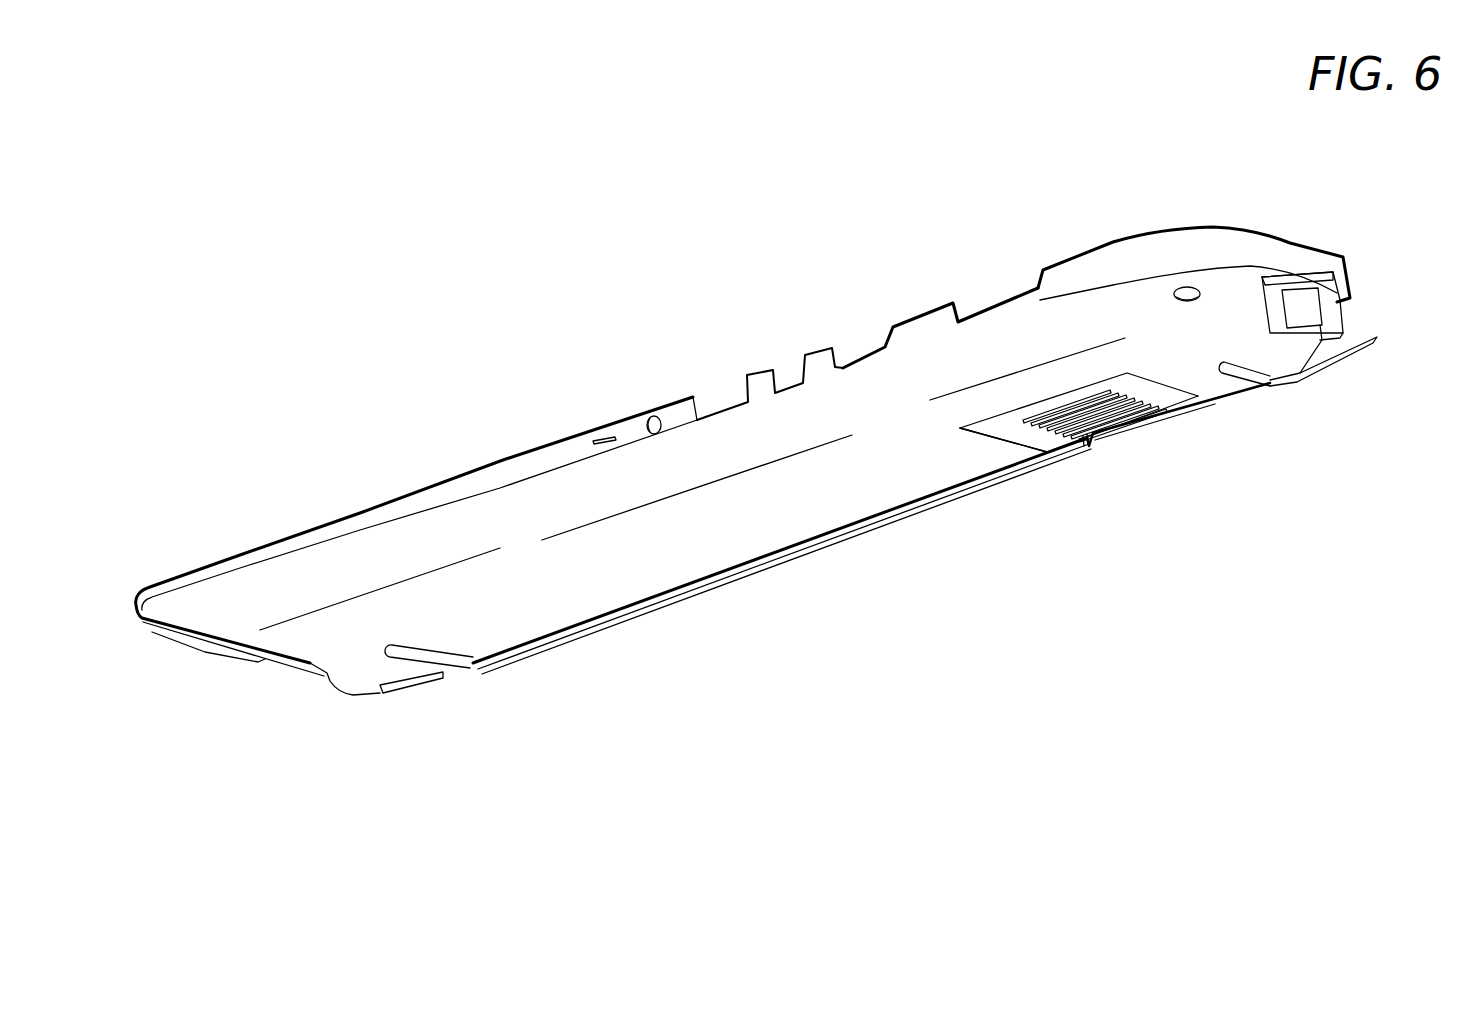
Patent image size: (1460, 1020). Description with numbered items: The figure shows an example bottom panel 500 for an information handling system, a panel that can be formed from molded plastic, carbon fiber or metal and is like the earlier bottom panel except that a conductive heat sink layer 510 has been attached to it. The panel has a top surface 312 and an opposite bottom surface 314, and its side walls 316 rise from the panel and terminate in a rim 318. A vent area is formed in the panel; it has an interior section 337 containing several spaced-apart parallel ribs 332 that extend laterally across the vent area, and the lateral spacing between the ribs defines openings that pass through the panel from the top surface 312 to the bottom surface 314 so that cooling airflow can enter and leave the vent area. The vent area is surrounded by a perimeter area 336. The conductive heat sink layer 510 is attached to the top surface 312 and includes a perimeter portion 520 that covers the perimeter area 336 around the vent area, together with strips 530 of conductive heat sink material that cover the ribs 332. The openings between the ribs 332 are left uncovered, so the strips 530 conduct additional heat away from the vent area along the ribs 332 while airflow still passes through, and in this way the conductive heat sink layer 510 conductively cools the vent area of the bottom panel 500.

The bottom panel 500 is at (503, 460).
The top surface 312 is at (603, 497).
The bottom surface 314 is at (695, 585).
The side walls 316 is at (1150, 242).
The rim 318 is at (933, 312).
The perimeter area 336 is at (968, 445).
The perimeter portion 520 is at (1012, 427).
The conductive heat sink layer 510 is at (1010, 447).
The strips 530 is at (1108, 427).
The interior section 337 is at (1128, 408).
The ribs 332 is at (1133, 422).